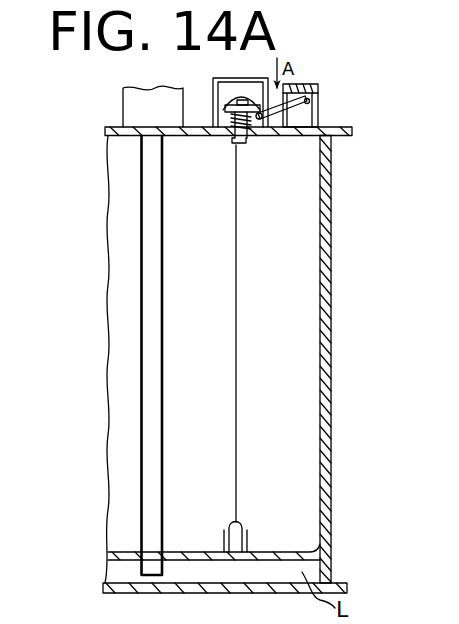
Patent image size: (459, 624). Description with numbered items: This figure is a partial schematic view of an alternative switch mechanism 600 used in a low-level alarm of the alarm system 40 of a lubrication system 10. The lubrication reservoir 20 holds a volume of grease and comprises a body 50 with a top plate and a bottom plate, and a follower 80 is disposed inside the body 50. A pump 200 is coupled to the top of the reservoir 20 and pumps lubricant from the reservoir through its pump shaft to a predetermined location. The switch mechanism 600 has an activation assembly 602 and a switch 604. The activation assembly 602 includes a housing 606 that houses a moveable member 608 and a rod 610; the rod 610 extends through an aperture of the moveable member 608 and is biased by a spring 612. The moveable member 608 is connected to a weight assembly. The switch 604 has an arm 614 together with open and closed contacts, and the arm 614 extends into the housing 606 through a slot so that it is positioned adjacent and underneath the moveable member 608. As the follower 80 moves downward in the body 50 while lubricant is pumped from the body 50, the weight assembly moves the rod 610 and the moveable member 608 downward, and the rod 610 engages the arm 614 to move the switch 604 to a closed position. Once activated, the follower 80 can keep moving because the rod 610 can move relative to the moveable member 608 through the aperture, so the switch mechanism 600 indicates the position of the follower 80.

The lubrication system 10 is at (340, 352).
The lubrication reservoir 20 is at (336, 449).
The alarm system 40 is at (314, 66).
The body 50 is at (332, 220).
The follower 80 is at (317, 547).
The pump 200 is at (145, 98).
The switch mechanism 600 is at (317, 80).
The activation assembly 602 is at (251, 78).
The switch 604 is at (319, 92).
The housing 606 is at (229, 80).
The moveable member 608 is at (249, 141).
The rod 610 is at (218, 97).
The spring 612 is at (256, 119).
The arm 614 is at (320, 113).